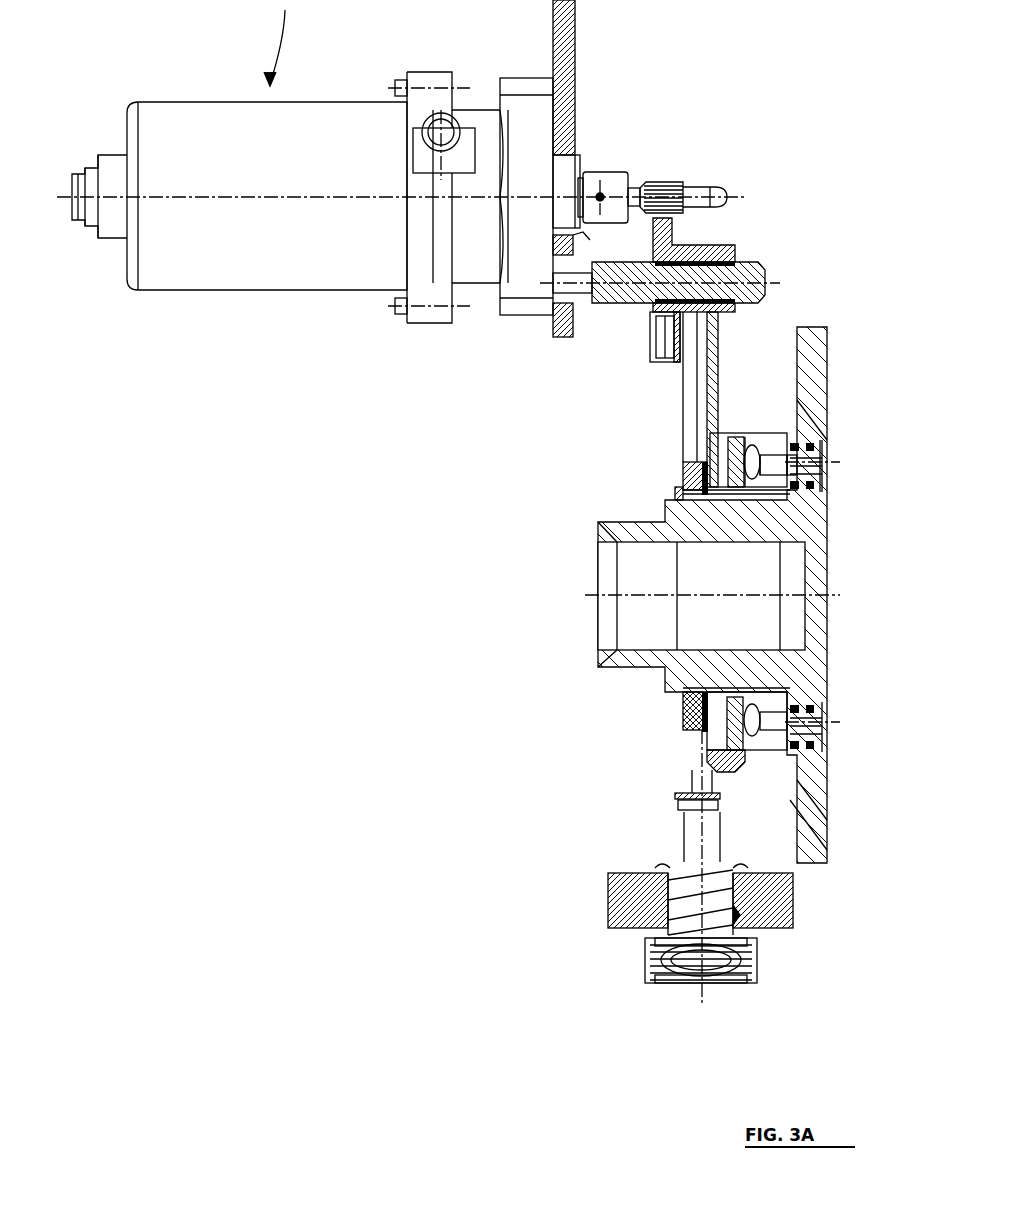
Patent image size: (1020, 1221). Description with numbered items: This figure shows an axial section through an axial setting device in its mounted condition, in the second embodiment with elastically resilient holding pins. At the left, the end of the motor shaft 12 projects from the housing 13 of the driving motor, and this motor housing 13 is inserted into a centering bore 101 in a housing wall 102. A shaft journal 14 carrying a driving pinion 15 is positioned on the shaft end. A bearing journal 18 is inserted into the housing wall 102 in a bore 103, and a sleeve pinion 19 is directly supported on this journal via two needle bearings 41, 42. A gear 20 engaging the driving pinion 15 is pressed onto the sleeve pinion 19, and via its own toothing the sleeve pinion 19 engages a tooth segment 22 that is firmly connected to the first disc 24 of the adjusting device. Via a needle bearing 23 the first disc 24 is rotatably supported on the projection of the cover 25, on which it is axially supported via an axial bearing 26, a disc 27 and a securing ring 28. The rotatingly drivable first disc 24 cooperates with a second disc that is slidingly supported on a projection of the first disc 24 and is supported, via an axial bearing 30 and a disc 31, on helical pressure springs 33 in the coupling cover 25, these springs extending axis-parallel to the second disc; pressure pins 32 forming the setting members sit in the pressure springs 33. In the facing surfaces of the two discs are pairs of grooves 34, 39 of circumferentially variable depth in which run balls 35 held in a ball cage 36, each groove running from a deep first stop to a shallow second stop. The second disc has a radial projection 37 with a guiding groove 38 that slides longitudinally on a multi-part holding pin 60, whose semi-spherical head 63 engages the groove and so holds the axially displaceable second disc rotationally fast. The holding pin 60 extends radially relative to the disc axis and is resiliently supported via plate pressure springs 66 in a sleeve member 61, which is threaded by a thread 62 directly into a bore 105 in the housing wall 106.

The housing wall 102 is at (576, 88).
The housing 13 is at (570, 178).
The motor shaft 12 is at (593, 184).
The driving pinion 15 is at (668, 181).
The shaft journal 14 is at (710, 187).
The centering bore 101 is at (578, 241).
The bearing journal 18 is at (622, 282).
The needle bearing 41 is at (690, 254).
The needle bearing 42 is at (728, 264).
The bore 103 is at (578, 310).
The cover 25 is at (800, 380).
The tooth segment 22 is at (716, 334).
The first disc 24 is at (728, 432).
The needle bearing 23 is at (830, 373).
The ball cage 36 is at (738, 437).
The balls 35 is at (754, 445).
The gear 20 is at (652, 362).
The sleeve pinion 19 is at (690, 340).
The securing ring 28 is at (686, 495).
The disc 27 is at (695, 492).
The axial bearing 26 is at (707, 494).
The axial bearing 30 is at (752, 495).
The disc 31 is at (766, 492).
The pressure springs 33 is at (798, 492).
The pressure pins 32 is at (818, 492).
The groove 34 is at (725, 690).
The groove 39 is at (738, 690).
The guiding groove 38 is at (690, 793).
The radial projection 37 is at (690, 778).
The semi-spherical head 63 is at (713, 798).
The holding pin 60 is at (700, 846).
The bore 105 is at (668, 868).
The housing wall 106 is at (620, 903).
The thread 62 is at (742, 880).
The sleeve member 61 is at (760, 958).
The plate pressure springs 66 is at (648, 962).